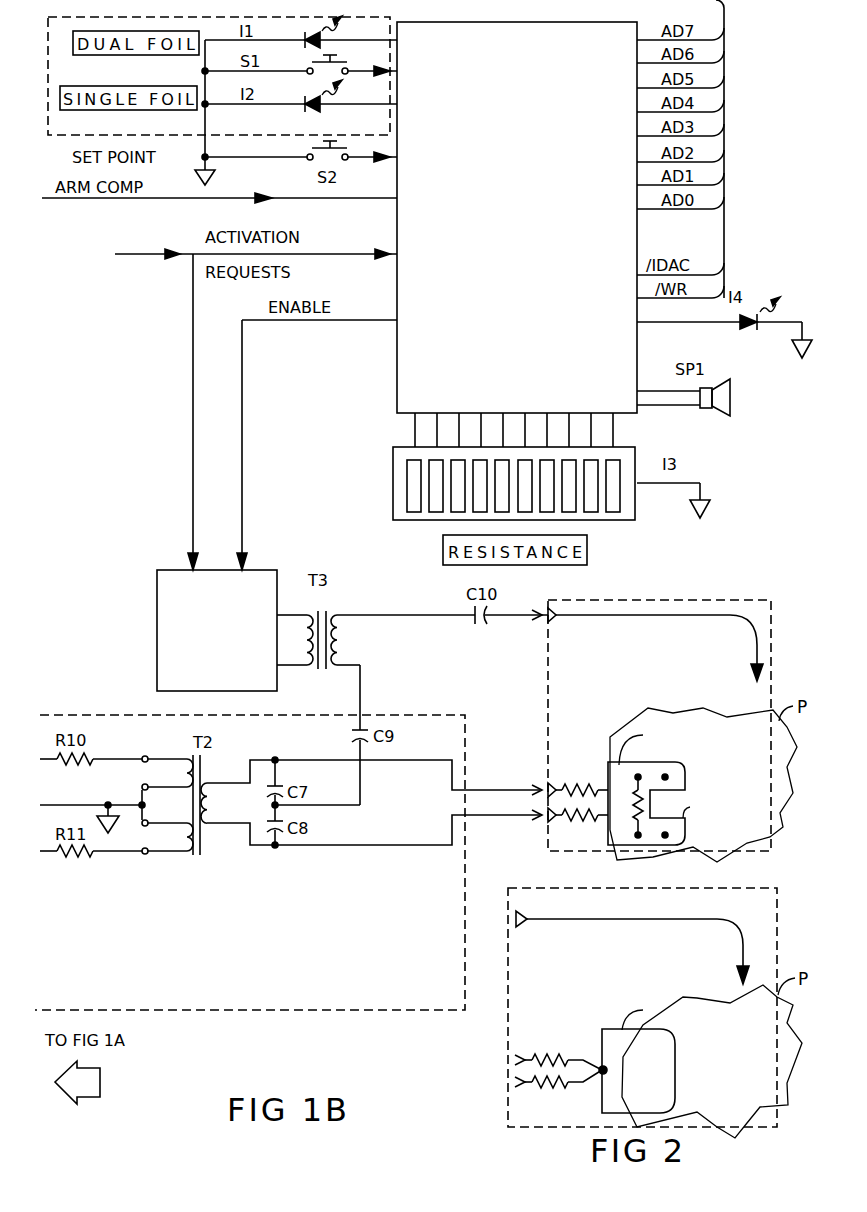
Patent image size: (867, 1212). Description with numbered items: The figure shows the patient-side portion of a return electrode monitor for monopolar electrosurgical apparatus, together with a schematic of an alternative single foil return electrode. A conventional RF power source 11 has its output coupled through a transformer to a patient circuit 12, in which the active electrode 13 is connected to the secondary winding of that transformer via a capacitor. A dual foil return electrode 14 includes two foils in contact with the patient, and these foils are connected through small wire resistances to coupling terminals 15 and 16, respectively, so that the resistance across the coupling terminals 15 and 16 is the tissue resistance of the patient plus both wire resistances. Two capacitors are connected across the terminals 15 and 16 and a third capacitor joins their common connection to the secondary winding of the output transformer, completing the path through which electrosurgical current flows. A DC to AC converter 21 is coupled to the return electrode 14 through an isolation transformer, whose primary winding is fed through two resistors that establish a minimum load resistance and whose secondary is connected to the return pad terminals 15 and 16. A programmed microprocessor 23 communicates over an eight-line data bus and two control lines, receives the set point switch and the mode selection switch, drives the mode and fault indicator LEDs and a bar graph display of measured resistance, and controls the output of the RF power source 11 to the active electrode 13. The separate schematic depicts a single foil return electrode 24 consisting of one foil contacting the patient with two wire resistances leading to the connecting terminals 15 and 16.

In FIG. 1B, the RF power source 11 is at (252, 570).
In FIG. 1B, the patient circuit 12 is at (683, 600).
In FIG. 1B, the active electrode 13 is at (762, 662).
In FIG. 2, the active electrode 13 is at (748, 978).
In FIG. 1B, the dual foil return electrode 14 is at (700, 752).
In FIG. 1B, the coupling terminal 15 is at (552, 785).
In FIG. 2, the coupling terminal 15 is at (525, 1058).
In FIG. 1B, the coupling terminal 16 is at (552, 822).
In FIG. 2, the coupling terminal 16 is at (525, 1088).
In FIG. 1B, the DC to AC converter 21 is at (295, 1010).
In FIG. 1B, the microprocessor 23 is at (517, 217).
In FIG. 2, the single foil return electrode 24 is at (610, 1005).